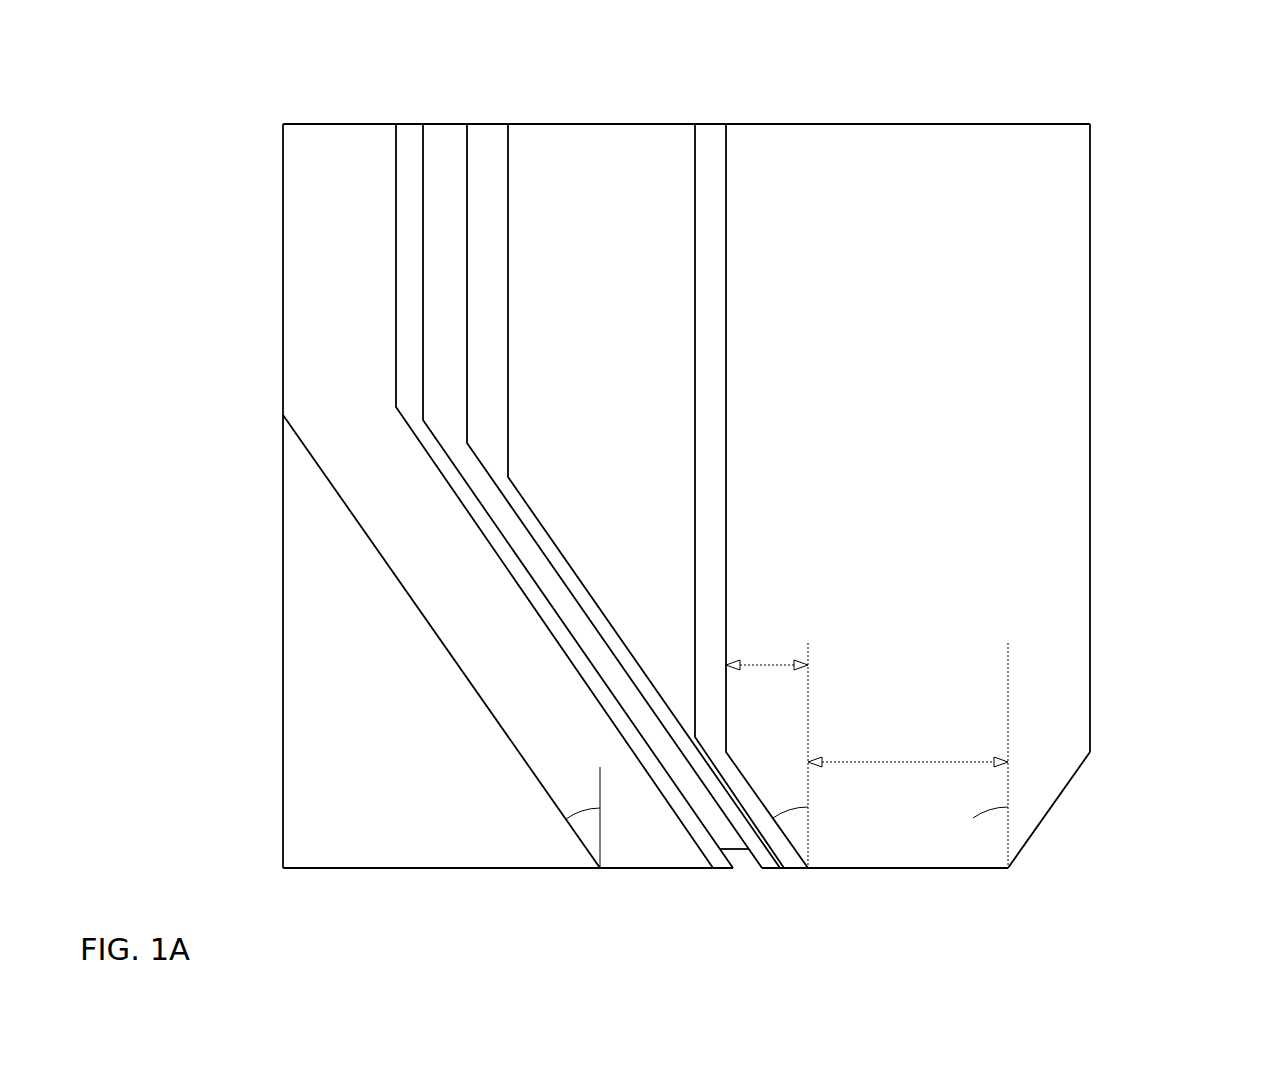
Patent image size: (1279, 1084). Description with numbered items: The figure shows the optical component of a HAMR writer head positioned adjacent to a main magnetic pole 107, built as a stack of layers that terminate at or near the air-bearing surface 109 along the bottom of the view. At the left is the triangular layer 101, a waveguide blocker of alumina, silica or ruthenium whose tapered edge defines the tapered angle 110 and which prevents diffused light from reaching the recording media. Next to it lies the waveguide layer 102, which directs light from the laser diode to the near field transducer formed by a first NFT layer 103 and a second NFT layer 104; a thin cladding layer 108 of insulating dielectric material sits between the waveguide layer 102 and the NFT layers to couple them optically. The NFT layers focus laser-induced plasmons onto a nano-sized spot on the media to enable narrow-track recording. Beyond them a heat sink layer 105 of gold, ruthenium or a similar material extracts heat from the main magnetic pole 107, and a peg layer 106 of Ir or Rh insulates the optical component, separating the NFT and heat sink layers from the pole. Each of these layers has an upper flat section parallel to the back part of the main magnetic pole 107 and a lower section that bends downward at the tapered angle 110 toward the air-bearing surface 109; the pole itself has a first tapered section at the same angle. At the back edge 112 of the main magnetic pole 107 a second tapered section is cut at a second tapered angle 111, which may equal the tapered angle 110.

The triangular layer 101 is at (284, 742).
The waveguide layer 102 is at (284, 248).
The first NFT layer 103 is at (736, 840).
The second NFT layer 104 is at (770, 870).
The heat sink layer 105 is at (588, 124).
The peg layer 106 is at (712, 124).
The main magnetic pole 107 is at (1090, 283).
The cladding layer 108 is at (402, 124).
The air-bearing surface 109 is at (337, 870).
The tapered angle 110 is at (578, 818).
The second tapered angle 111 is at (1027, 810).
The back edge 112 is at (1090, 150).